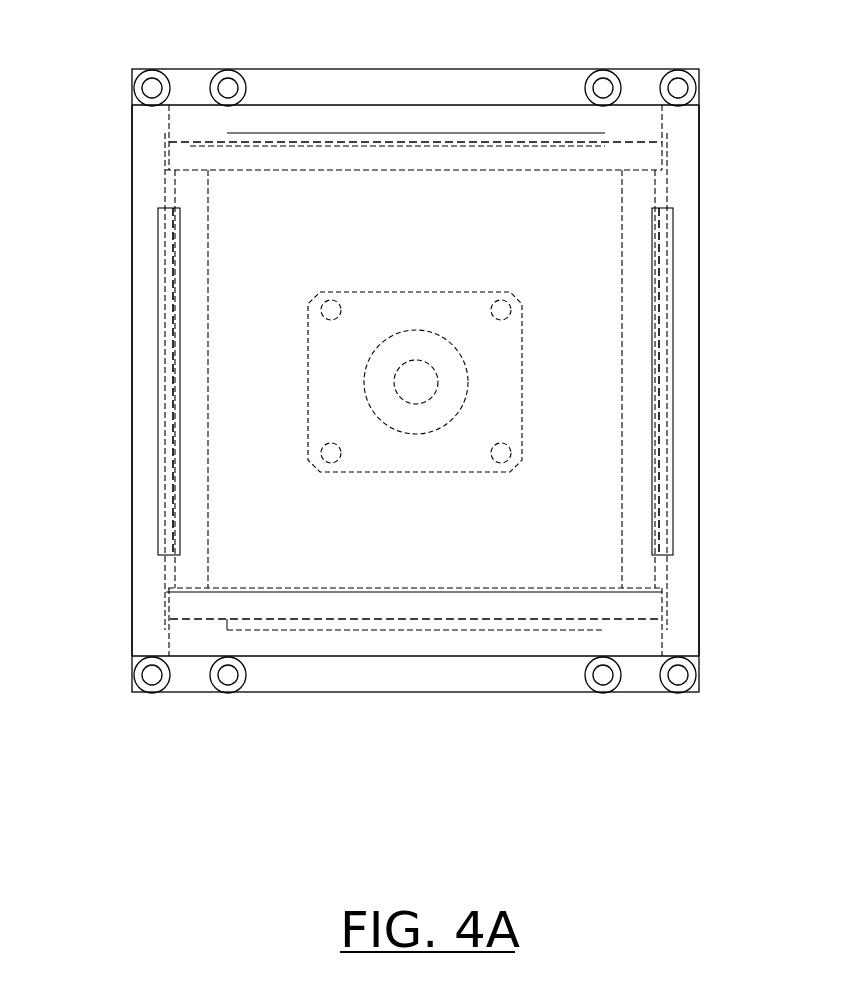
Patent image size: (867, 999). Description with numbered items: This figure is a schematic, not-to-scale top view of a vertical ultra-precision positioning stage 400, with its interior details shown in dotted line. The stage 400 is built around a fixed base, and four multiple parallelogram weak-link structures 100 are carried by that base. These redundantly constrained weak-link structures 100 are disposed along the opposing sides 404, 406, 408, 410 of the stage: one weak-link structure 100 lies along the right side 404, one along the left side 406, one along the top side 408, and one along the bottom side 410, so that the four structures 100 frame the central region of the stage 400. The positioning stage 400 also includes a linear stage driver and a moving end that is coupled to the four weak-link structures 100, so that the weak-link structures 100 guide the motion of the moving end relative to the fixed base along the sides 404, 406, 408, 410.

The vertical ultra-precision positioning stage 400 is at (456, 19).
The redundantly constrained weak-link structure 100 is at (488, 134).
The side 404 is at (700, 305).
The side 406 is at (130, 295).
The side 408 is at (312, 68).
The side 410 is at (332, 690).